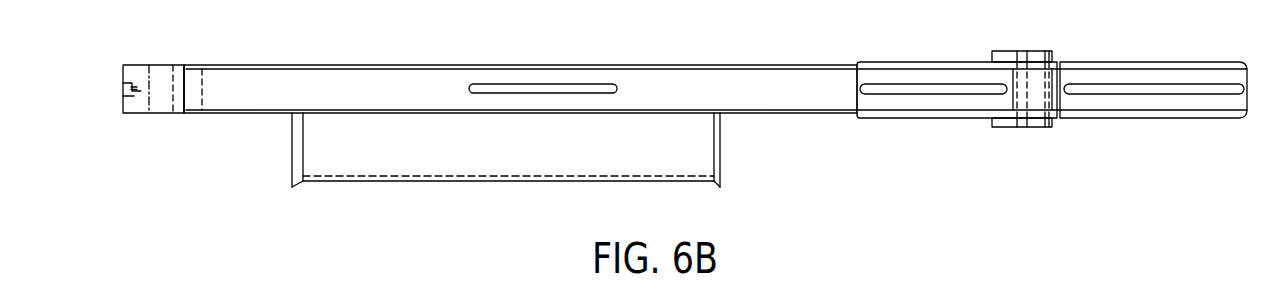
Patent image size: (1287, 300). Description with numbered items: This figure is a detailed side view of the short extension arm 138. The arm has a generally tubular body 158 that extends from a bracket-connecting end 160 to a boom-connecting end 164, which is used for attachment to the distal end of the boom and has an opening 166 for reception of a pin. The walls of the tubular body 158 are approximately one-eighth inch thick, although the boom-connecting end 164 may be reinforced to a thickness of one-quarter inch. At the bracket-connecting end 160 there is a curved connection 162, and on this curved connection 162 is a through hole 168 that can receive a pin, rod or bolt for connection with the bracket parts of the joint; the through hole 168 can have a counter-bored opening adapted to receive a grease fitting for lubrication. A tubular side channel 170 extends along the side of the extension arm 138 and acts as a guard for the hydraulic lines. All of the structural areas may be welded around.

The short extension arm 138 is at (810, 149).
The tubular body 158 is at (747, 77).
The bracket-connecting end 160 is at (185, 124).
The curved connection 162 is at (115, 110).
The boom-connecting end 164 is at (1151, 147).
The opening 166 is at (170, 88).
The through hole 168 is at (122, 88).
The tubular side channel 170 is at (433, 165).